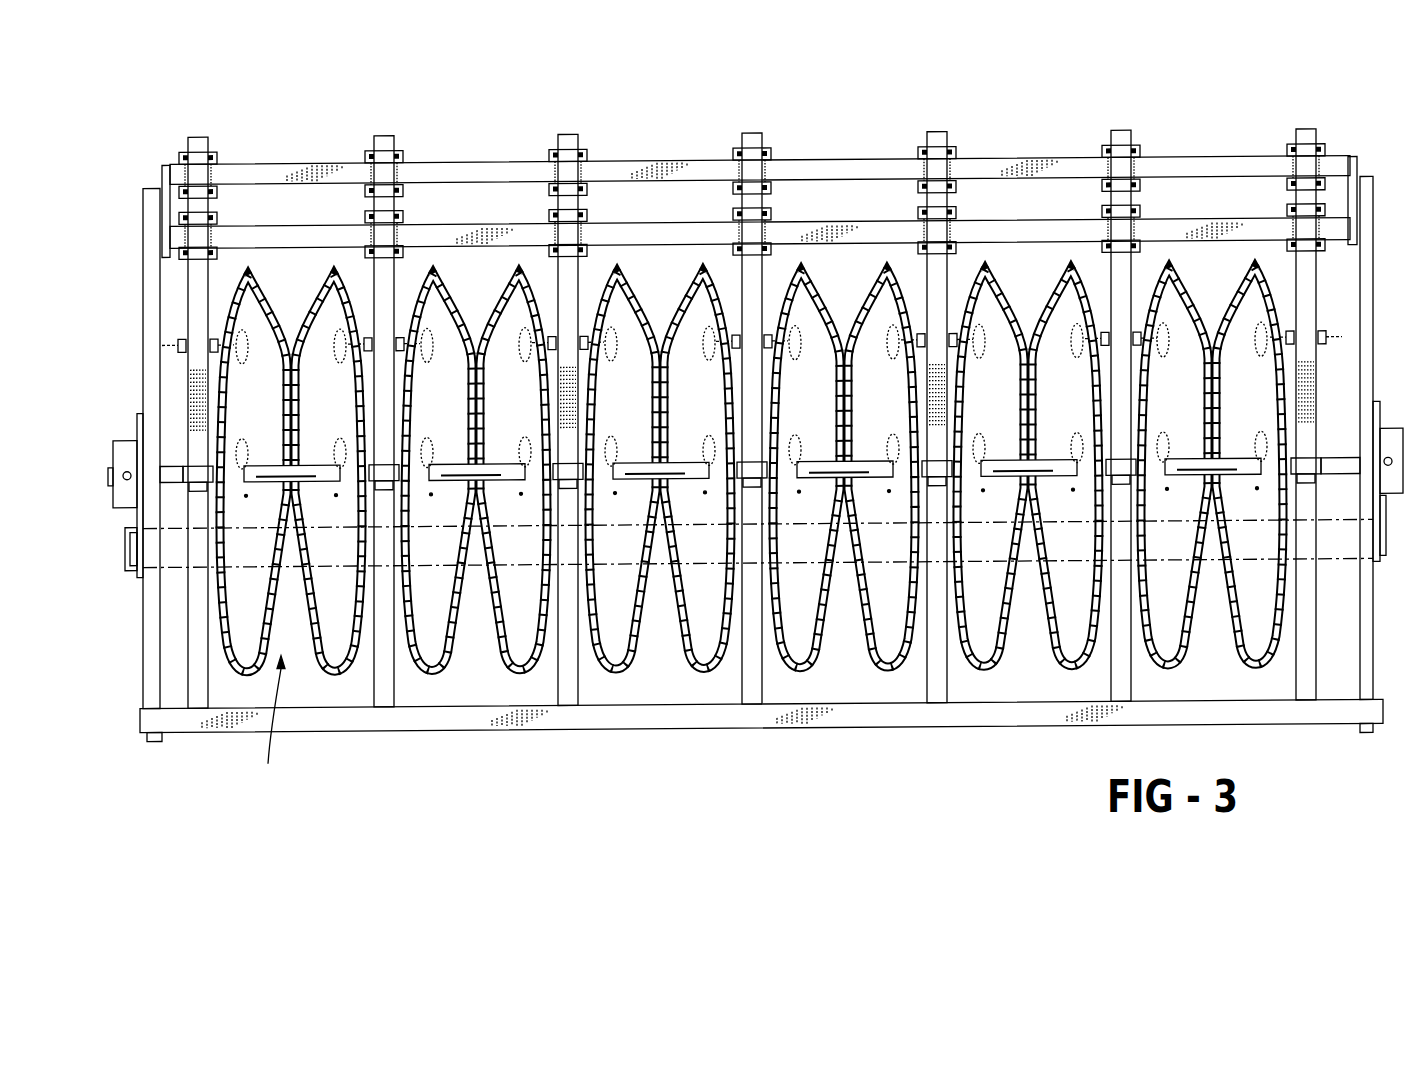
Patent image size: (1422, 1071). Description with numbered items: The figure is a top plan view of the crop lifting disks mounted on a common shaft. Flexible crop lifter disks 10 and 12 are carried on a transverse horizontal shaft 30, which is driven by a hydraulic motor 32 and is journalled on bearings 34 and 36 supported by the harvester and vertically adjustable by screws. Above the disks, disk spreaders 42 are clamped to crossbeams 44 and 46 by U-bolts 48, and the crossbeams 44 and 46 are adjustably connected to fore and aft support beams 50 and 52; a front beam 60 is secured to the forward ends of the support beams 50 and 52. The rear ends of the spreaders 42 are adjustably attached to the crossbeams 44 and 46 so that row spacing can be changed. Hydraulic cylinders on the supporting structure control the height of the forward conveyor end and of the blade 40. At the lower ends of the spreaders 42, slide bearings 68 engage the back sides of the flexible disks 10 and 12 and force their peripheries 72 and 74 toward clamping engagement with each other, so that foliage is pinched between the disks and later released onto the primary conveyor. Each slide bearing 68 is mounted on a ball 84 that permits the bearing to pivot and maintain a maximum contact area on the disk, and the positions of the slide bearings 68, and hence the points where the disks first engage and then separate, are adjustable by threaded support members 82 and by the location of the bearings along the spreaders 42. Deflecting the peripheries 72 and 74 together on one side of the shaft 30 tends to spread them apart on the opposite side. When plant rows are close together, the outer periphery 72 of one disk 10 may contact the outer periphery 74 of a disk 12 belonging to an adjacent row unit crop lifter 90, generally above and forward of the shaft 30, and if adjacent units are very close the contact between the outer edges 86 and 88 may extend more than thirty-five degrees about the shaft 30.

The crop lifter disk 10 is at (936, 528).
The crop lifter disk 12 is at (630, 660).
The transverse horizontal shaft 30 is at (420, 396).
The hydraulic motor 32 is at (108, 487).
The bearing 34 is at (1388, 515).
The bearing 36 is at (126, 438).
The blade 40 is at (846, 565).
The disk spreader 42 is at (935, 272).
The crossbeam 44 is at (623, 160).
The crossbeam 46 is at (1092, 222).
The U-bolt 48 is at (405, 157).
The support beam 50 is at (1376, 652).
The support beam 52 is at (143, 205).
The front beam 60 is at (299, 730).
The slide bearing 68 is at (243, 330).
The periphery 72 is at (1062, 650).
The periphery 74 is at (466, 528).
The threaded support member 82 is at (588, 345).
The ball 84 is at (237, 440).
The outer edge 86 is at (370, 672).
The outer edge 88 is at (410, 668).
The adjacent row unit crop lifter 90 is at (270, 722).